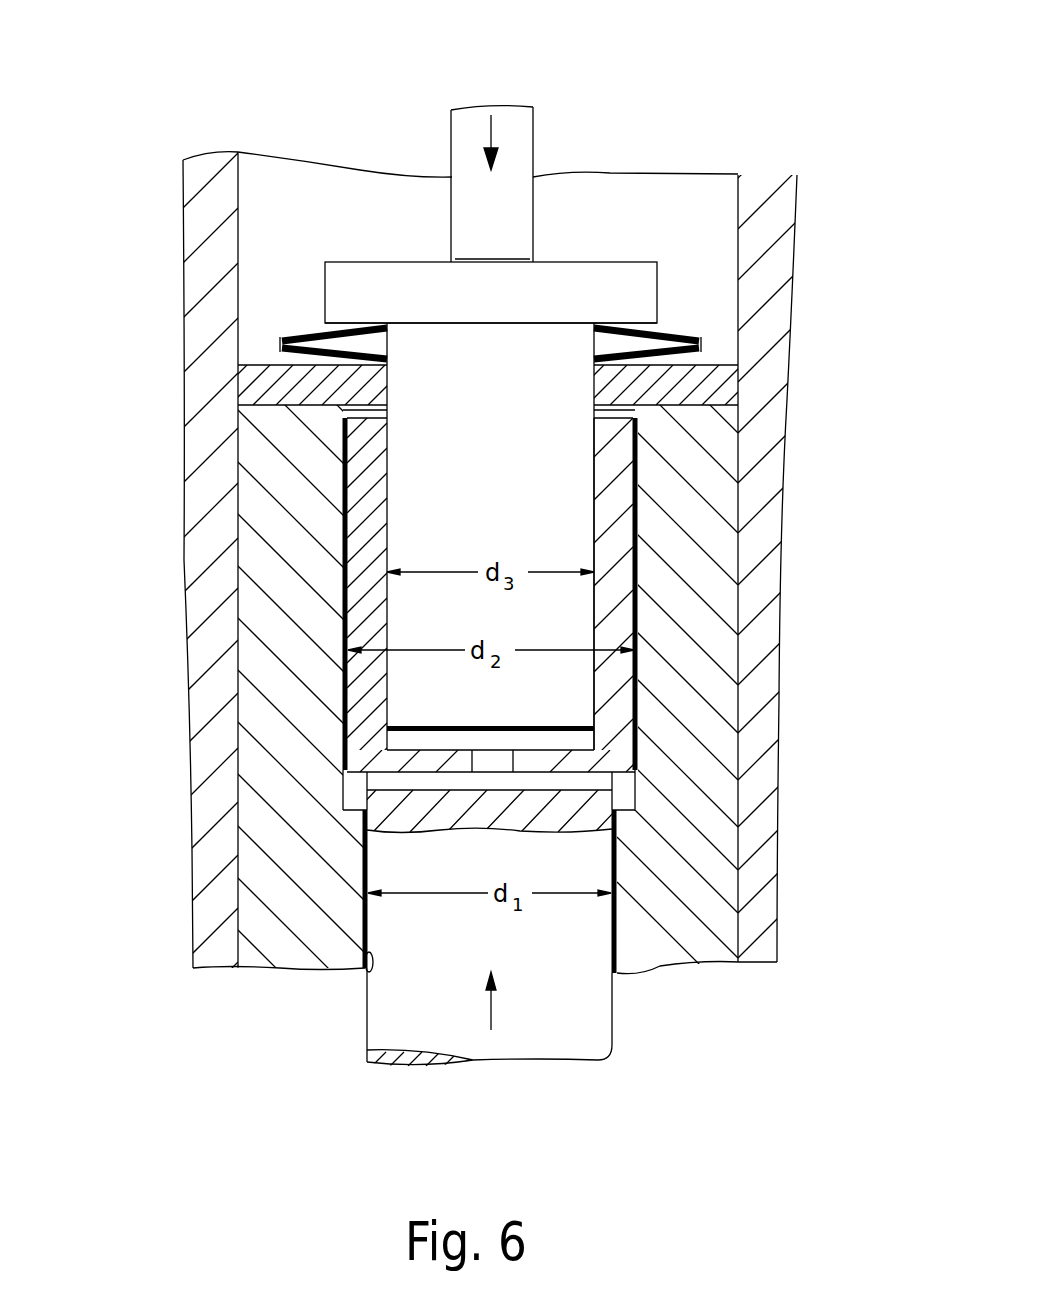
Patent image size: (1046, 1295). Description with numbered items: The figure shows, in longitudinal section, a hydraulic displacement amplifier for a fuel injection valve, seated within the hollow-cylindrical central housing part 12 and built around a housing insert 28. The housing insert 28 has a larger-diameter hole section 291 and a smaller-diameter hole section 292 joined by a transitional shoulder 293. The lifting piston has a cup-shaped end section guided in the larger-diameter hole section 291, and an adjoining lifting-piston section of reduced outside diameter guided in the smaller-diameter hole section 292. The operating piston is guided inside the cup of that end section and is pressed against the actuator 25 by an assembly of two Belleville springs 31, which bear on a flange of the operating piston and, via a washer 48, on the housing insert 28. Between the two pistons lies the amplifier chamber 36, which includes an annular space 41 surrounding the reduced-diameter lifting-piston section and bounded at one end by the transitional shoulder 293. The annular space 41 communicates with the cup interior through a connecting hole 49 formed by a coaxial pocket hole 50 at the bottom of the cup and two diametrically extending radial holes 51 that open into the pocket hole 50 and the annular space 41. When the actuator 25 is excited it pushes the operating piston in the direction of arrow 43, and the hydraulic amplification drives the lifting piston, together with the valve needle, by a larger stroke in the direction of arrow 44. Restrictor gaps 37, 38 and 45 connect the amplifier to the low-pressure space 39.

The central housing part 12 is at (765, 573).
The actuator 25 is at (512, 135).
The housing insert 28 is at (688, 737).
The larger-diameter hole section 291 is at (487, 760).
The smaller-diameter hole section 292 is at (380, 1007).
The transitional shoulder 293 is at (367, 827).
The Belleville springs 31 is at (695, 357).
The amplifier chamber 36 is at (385, 740).
The restrictor gap 37 is at (600, 540).
The restrictor gap 38 is at (614, 975).
The low-pressure space 39 is at (685, 227).
The annular space 41 is at (627, 778).
The arrow 43 is at (488, 133).
The arrow 44 is at (494, 1006).
The restrictor gap 45 is at (640, 490).
The washer 48 is at (270, 392).
The connecting hole 49 is at (365, 885).
The pocket hole 50 is at (446, 789).
The radial holes 51 is at (363, 860).